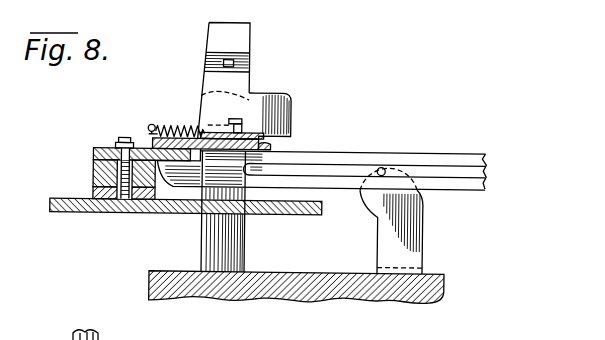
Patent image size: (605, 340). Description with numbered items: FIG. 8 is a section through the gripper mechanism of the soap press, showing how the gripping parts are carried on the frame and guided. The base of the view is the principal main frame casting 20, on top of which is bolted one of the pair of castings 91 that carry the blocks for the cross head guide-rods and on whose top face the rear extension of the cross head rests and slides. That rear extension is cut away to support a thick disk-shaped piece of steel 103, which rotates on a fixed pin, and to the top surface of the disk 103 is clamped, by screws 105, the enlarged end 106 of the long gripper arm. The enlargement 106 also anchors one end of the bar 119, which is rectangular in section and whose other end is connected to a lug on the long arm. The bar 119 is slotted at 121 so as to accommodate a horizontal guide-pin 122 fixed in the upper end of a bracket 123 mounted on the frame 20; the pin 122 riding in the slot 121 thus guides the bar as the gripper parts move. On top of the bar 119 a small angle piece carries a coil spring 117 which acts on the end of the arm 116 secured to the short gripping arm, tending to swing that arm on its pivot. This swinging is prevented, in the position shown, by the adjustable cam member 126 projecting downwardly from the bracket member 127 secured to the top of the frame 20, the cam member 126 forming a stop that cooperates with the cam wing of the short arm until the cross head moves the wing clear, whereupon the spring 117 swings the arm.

The main frame casting 20 is at (347, 292).
The casting 91 is at (132, 208).
The disk-shaped piece of steel 103 is at (93, 180).
The screws 105 is at (121, 139).
The enlarged end 106 is at (93, 154).
The arm 116 is at (155, 126).
The coil spring 117 is at (171, 126).
The bar 119 is at (318, 157).
The slot 121 is at (448, 172).
The guide-pin 122 is at (384, 166).
The bracket 123 is at (413, 225).
The cam member 126 is at (243, 110).
The bracket member 127 is at (237, 33).